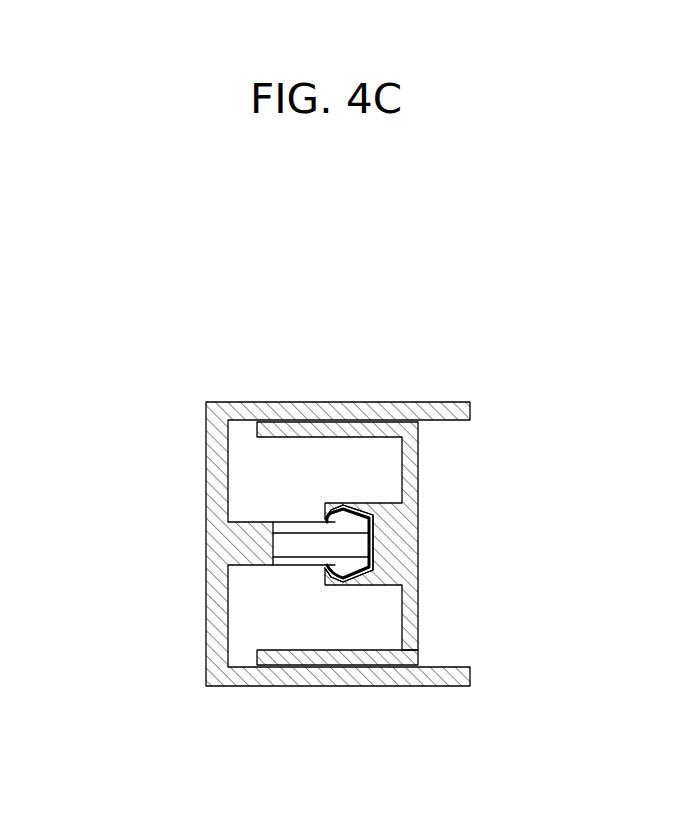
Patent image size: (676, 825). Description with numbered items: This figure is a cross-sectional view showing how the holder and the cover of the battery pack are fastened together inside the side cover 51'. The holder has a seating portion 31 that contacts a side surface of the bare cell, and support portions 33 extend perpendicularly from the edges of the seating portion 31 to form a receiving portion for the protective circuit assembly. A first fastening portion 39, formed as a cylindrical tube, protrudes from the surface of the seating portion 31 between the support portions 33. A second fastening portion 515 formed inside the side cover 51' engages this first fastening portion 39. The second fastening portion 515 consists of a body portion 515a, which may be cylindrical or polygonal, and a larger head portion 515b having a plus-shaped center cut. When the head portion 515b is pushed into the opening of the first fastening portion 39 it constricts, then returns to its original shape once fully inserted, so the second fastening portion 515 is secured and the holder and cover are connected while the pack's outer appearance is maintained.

The side cover 51' is at (338, 496).
The seating portion 31 is at (416, 598).
The support portion 33 is at (368, 656).
The first fastening portion 39 is at (332, 579).
The second fastening portion 515 is at (140, 454).
The body portion 515a is at (272, 528).
The head portion 515b is at (352, 565).